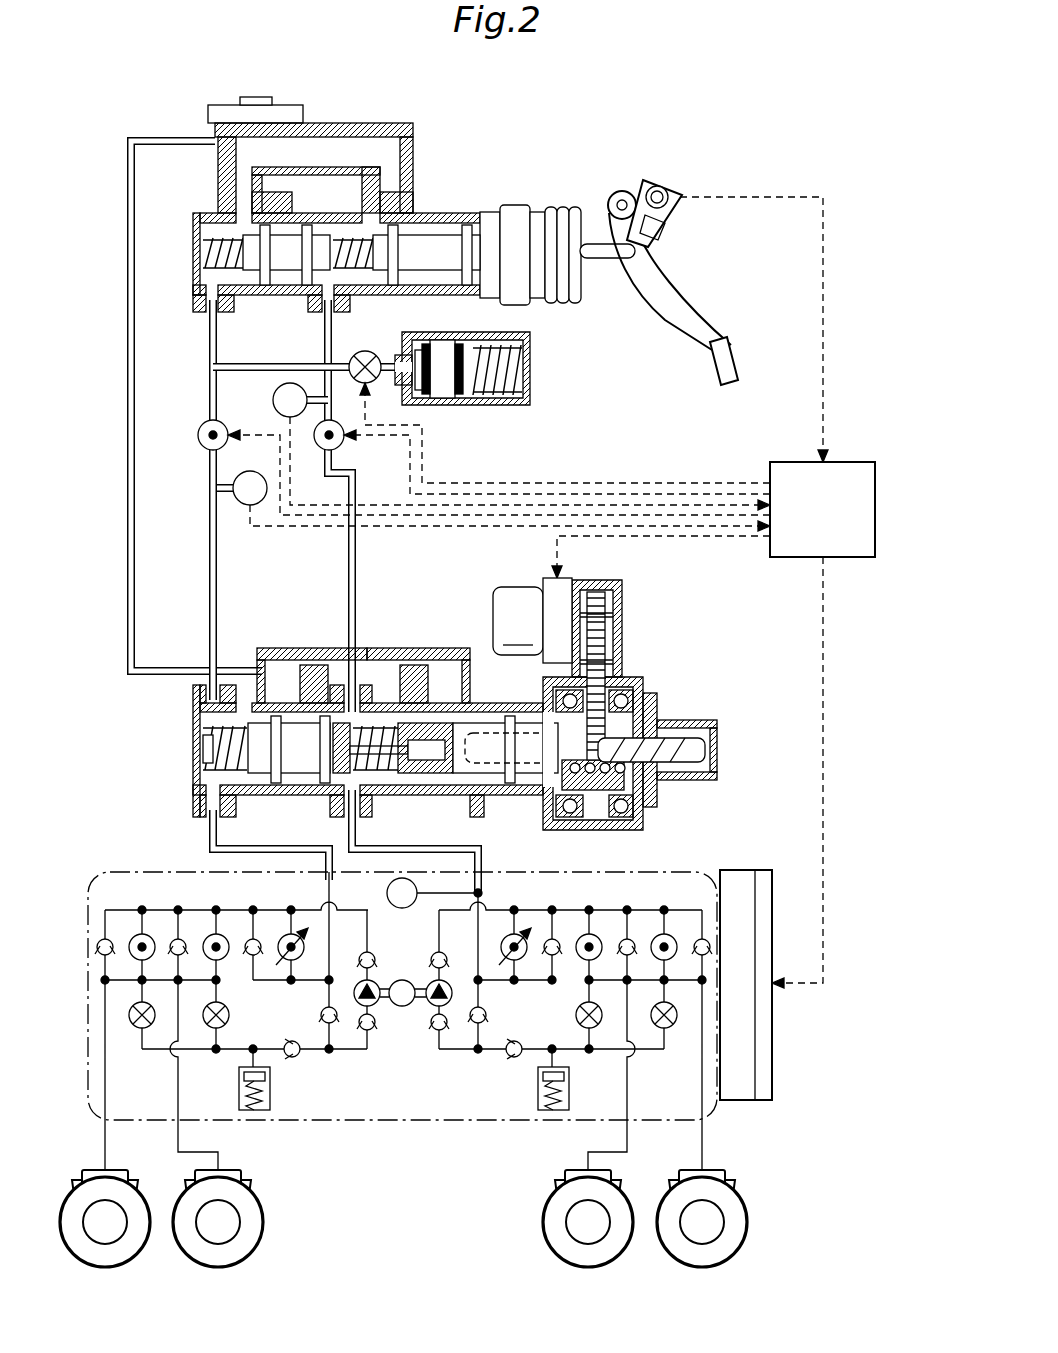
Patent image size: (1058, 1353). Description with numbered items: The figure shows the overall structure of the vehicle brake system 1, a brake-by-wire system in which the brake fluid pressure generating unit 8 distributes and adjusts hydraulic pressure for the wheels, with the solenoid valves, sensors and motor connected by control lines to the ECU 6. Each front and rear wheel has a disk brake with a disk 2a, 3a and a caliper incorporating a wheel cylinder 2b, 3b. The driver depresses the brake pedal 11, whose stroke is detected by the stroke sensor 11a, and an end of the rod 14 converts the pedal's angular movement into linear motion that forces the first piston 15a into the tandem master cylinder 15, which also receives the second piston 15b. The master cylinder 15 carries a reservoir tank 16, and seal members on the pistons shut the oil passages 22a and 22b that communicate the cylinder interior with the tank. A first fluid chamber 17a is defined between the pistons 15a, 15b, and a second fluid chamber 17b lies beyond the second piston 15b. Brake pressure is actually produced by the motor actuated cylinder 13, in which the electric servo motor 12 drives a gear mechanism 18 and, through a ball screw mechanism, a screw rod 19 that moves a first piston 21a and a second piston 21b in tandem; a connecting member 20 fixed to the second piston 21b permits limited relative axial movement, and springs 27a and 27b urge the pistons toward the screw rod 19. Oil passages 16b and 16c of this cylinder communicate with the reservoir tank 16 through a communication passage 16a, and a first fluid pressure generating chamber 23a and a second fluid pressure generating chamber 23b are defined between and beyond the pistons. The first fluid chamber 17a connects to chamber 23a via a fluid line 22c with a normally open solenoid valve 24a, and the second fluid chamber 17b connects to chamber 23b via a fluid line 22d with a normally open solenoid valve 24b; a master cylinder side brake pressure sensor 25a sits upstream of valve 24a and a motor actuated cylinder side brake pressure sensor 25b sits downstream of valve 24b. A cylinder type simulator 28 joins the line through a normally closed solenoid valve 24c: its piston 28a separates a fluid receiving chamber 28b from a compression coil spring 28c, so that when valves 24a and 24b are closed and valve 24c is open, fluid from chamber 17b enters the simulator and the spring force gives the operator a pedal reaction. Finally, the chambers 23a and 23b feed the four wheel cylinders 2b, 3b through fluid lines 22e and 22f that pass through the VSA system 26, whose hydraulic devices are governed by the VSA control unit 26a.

The brake system 1 is at (122, 42).
The disk 2a is at (145, 1212).
The wheel cylinder 2b is at (120, 1175).
The disk 3a is at (550, 1212).
The wheel cylinder 3b is at (568, 1175).
The ECU (electronic control unit) 6 is at (860, 462).
The brake fluid pressure generating unit 8 is at (585, 124).
The brake pedal 11 is at (665, 292).
The stroke sensor 11a is at (660, 190).
The electric servo motor 12 is at (520, 588).
The motor actuated cylinder 13 is at (692, 661).
The rod 14 is at (592, 246).
The master cylinder 15 is at (468, 204).
The first piston 15a is at (430, 240).
The second piston 15b is at (285, 265).
The reservoir tank 16 is at (318, 122).
The communication passage 16a is at (128, 315).
The oil passage 16b is at (440, 690).
The oil passage 16c is at (283, 690).
The first fluid chamber 17a is at (343, 235).
The second fluid chamber 17b is at (215, 240).
The gear mechanism 18 is at (622, 601).
The screw rod 19 is at (680, 758).
The connecting member 20 is at (375, 748).
The first piston 21a is at (470, 760).
The second piston 21b is at (300, 770).
The oil passage 22a is at (368, 200).
The oil passage 22b is at (245, 195).
The fluid line 22c is at (357, 545).
The fluid line 22d is at (210, 545).
The fluid line 22e is at (490, 852).
The fluid line 22f is at (210, 833).
The first fluid pressure generating chamber 23a is at (400, 730).
The second fluid pressure generating chamber 23b is at (210, 725).
The normally open solenoid valve 24a is at (343, 447).
The normally open solenoid valve 24b is at (200, 445).
The normally closed solenoid valve 24c is at (366, 352).
The master cylinder side brake pressure sensor 25a is at (273, 400).
The motor actuated cylinder side brake pressure sensor 25b is at (250, 505).
The VSA system 26 is at (135, 872).
The VSA control unit 26a is at (745, 872).
The spring 27a is at (380, 772).
The spring 27b is at (212, 766).
The simulator 28 is at (533, 368).
The piston 28a is at (440, 352).
The fluid receiving chamber 28b is at (418, 396).
The compression coil spring 28c is at (497, 400).